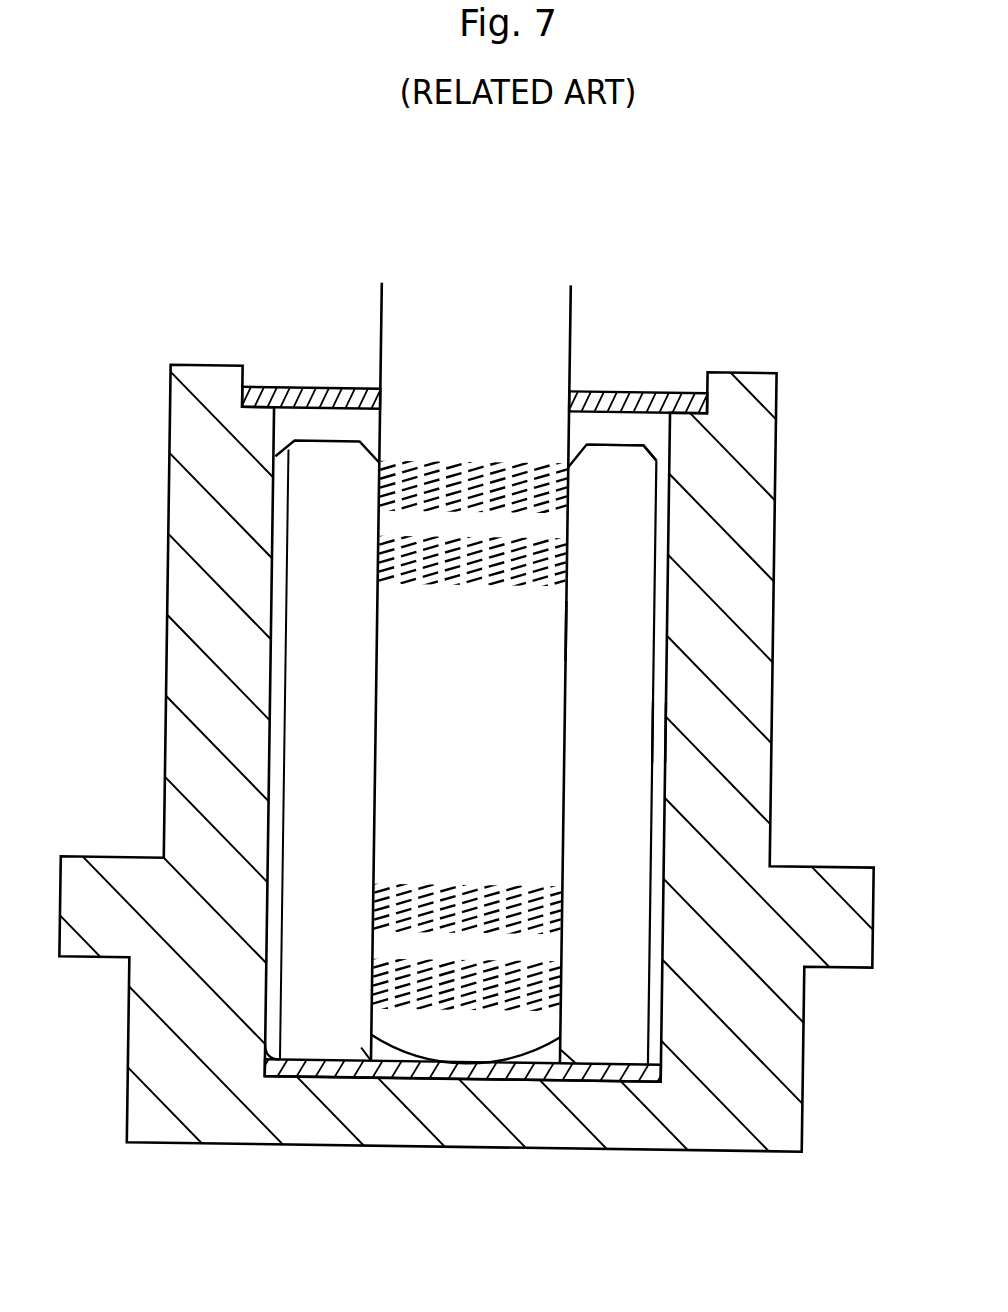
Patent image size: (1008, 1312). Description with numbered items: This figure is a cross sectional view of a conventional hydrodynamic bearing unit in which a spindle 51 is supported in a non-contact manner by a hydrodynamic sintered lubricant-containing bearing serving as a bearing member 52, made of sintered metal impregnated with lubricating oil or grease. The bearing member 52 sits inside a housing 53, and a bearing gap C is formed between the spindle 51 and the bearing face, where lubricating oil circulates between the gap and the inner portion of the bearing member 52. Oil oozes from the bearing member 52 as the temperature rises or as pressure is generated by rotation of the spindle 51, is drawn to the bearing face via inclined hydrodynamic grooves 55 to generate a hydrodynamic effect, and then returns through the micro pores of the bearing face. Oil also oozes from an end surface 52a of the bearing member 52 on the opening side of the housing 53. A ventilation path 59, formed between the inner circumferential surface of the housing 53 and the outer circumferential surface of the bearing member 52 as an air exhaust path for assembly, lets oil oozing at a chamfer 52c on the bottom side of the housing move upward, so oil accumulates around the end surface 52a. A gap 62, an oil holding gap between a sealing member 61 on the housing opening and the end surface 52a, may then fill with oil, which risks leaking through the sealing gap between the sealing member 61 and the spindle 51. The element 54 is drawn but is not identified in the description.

The spindle 51 is at (537, 315).
The bearing member 52 is at (310, 732).
The end surface 52a is at (661, 437).
The chamfer 52c is at (273, 1053).
The housing 53 is at (204, 610).
The bobbin wall 54 is at (376, 521).
The inclined hydrodynamic grooves 55 is at (490, 462).
The ventilation path 59 is at (660, 725).
The sealing member 61 is at (632, 465).
The gap 62 is at (306, 422).
The bearing gap C is at (563, 632).